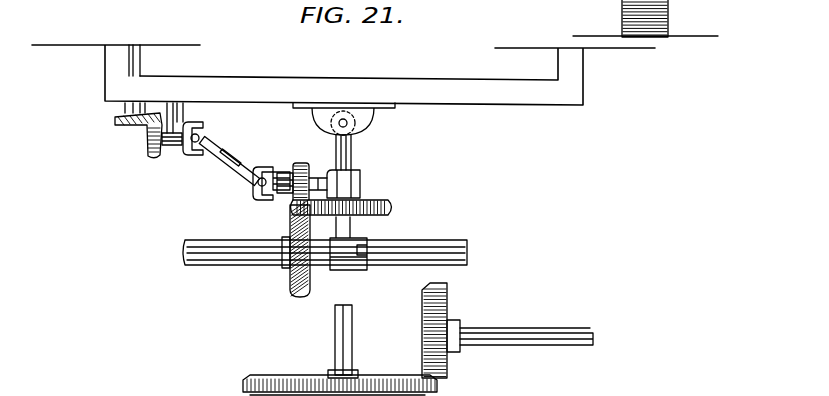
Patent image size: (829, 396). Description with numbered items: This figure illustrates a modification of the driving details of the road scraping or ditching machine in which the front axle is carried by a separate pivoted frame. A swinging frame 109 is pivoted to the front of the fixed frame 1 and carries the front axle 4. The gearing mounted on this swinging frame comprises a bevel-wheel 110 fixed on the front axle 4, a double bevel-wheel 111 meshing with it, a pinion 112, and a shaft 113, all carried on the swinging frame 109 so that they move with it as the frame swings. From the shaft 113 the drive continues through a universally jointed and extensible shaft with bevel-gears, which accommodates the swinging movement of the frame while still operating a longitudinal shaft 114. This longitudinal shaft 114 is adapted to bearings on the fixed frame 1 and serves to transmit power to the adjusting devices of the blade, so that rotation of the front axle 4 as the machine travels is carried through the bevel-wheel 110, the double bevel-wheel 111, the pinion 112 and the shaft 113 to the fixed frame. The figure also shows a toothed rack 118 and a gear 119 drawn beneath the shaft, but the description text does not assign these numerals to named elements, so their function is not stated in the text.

The fixed frame 1 is at (343, 90).
The front axle 4 is at (435, 235).
The swinging frame 109 is at (351, 153).
The bevel-wheel 110 is at (291, 222).
The double bevel-wheel 111 is at (351, 208).
The pinion 112 is at (303, 165).
The shaft 113 is at (236, 161).
The longitudinal shaft 114 is at (143, 60).
The rack 118 is at (340, 350).
The gear 119 is at (431, 330).